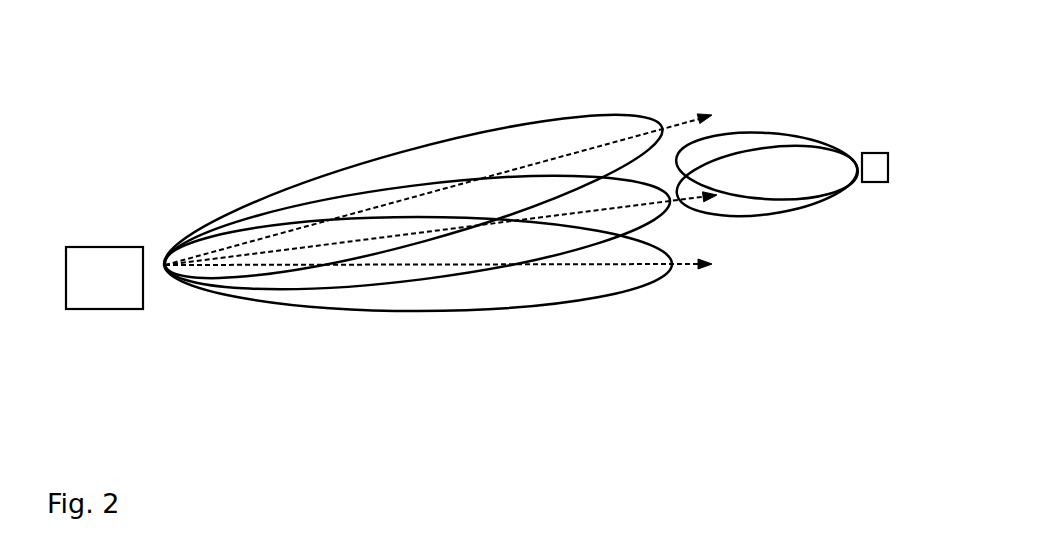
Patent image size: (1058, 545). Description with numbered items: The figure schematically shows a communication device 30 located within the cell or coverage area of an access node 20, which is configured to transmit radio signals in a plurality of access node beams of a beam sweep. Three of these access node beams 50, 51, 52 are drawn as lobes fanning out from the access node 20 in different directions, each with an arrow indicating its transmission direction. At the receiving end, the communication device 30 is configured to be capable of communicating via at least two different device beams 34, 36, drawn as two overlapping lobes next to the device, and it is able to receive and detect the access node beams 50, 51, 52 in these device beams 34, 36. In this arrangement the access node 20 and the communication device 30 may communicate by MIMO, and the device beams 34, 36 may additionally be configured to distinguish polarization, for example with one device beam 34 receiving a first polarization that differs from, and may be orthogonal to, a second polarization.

The access node 20 is at (119, 290).
The communication device 30 is at (888, 162).
The device beam 34 is at (758, 137).
The device beam 36 is at (767, 207).
The access node beam 50 is at (392, 155).
The access node beam 51 is at (290, 207).
The access node beam 52 is at (468, 308).